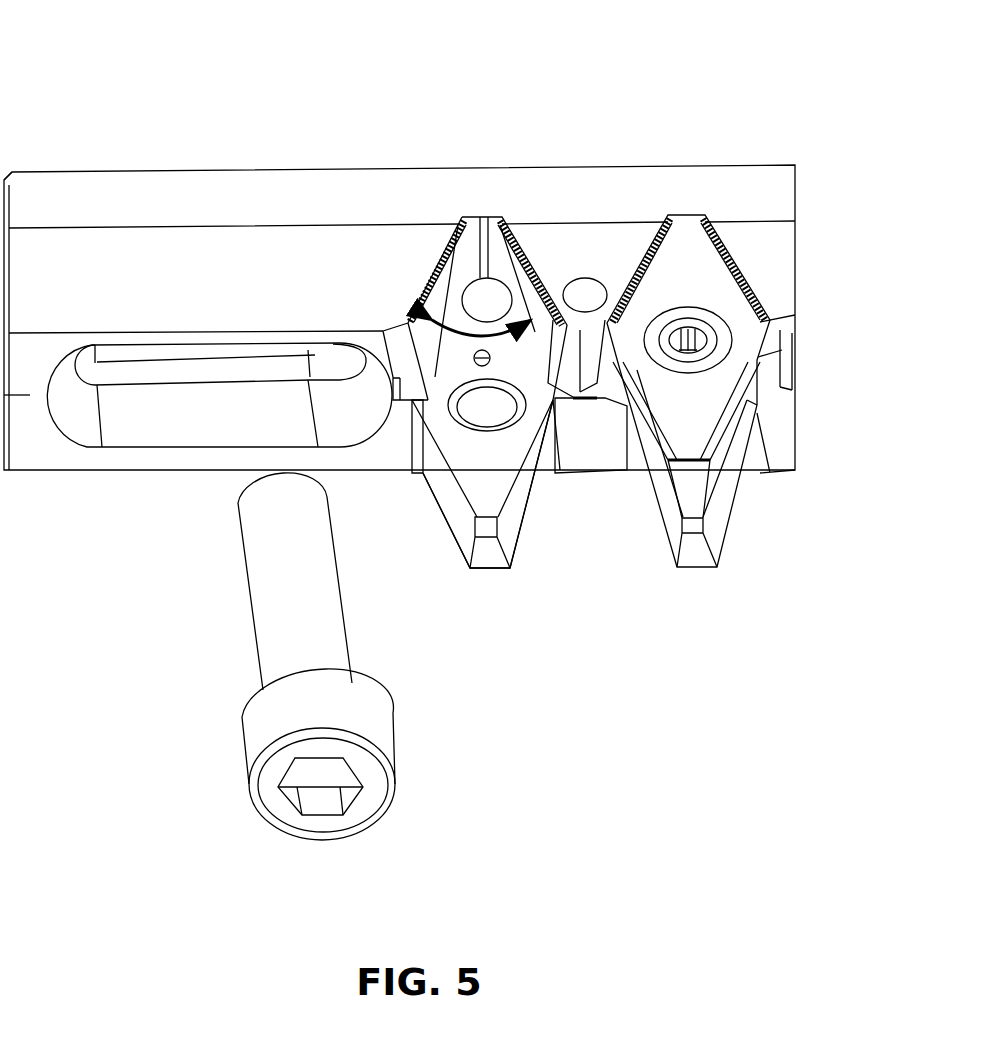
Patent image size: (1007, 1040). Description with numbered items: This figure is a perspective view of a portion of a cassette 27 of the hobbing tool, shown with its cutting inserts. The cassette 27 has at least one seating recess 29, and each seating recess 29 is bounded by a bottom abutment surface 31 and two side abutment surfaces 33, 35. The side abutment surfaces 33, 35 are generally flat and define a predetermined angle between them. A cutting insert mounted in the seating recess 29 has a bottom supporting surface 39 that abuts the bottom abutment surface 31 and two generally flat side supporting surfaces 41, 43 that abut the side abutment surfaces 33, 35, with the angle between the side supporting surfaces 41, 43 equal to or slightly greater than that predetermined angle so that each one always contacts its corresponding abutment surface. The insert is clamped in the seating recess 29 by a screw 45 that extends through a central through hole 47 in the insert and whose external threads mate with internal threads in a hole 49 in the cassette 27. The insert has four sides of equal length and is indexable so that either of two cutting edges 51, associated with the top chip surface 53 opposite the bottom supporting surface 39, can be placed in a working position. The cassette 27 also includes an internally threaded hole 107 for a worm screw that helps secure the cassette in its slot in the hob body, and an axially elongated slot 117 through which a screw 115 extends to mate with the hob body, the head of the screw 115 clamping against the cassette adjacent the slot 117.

The cassette 27 is at (180, 160).
The seating recess 29 is at (498, 323).
The bottom abutment surface 31 is at (500, 477).
The side abutment surface 33 is at (445, 283).
The side abutment surface 35 is at (532, 280).
The bottom supporting surface 39 is at (720, 478).
The side supporting surface 41 is at (648, 265).
The side supporting surface 43 is at (793, 470).
The screw 45 is at (769, 347).
The central through hole 47 is at (707, 369).
The hole 49 is at (480, 418).
The cutting edge 51 is at (686, 460).
The top chip surface 53 is at (739, 340).
The internally threaded hole 107 is at (573, 272).
The screw 115 is at (243, 624).
The axially elongated slot 117 is at (146, 420).